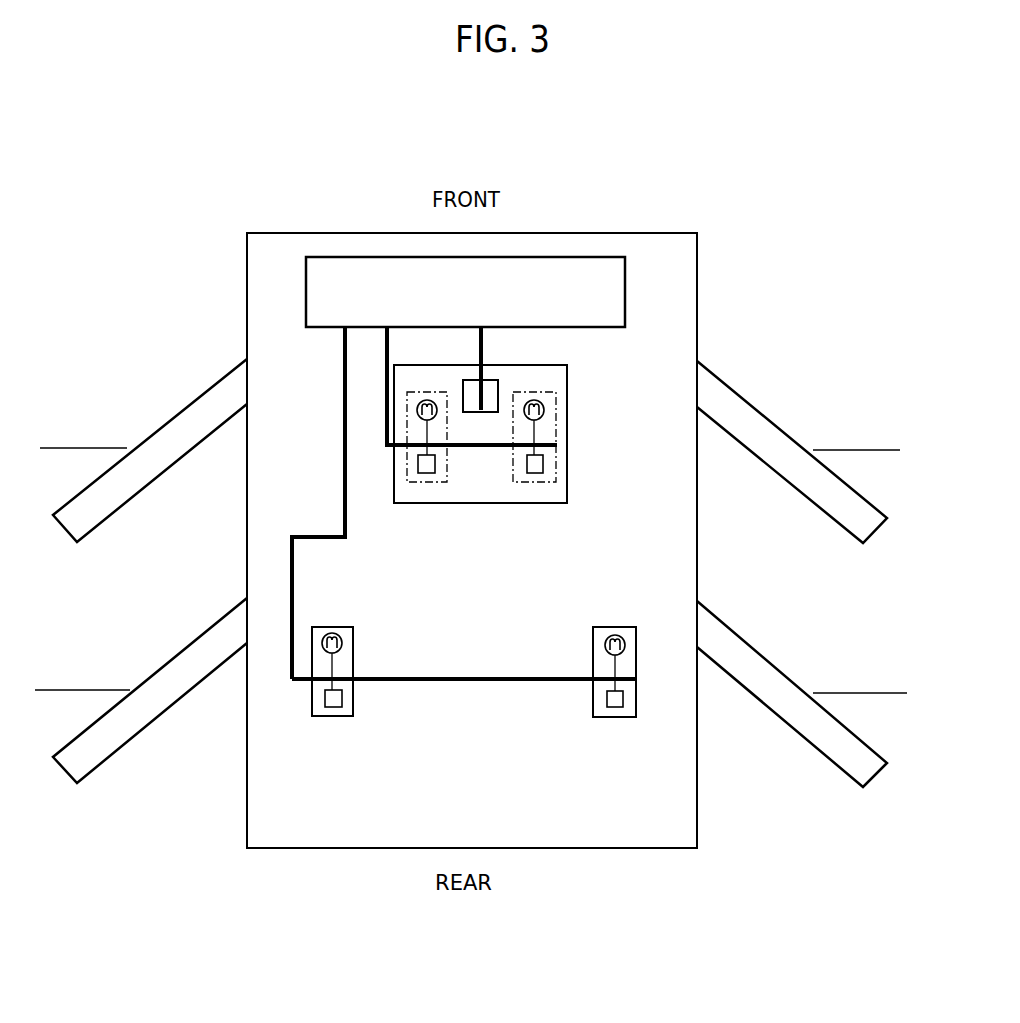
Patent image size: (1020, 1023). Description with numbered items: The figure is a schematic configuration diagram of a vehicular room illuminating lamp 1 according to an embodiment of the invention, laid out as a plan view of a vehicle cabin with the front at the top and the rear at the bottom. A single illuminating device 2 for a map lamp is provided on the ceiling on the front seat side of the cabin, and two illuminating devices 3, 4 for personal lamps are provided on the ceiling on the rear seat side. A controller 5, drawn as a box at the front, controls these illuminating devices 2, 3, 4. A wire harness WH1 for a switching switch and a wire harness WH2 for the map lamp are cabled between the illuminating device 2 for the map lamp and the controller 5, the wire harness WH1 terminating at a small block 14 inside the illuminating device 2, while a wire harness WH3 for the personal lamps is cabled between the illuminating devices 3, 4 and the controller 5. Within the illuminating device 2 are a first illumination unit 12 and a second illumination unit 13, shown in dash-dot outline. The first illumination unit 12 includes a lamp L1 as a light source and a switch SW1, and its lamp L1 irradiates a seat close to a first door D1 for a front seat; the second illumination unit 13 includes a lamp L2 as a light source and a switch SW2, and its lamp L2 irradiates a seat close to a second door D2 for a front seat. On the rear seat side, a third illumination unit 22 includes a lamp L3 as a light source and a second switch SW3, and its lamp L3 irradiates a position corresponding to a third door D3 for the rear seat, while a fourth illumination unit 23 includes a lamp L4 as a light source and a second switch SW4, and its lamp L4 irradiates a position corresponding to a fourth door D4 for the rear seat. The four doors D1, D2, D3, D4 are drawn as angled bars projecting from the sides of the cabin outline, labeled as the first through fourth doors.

The vehicular room illuminating lamp 1 is at (260, 202).
The controller 5 is at (618, 295).
The illuminating device for a map lamp 2 is at (567, 455).
The illuminating device for a personal lamp 3 is at (335, 627).
The illuminating device for a personal lamp 4 is at (620, 627).
The first illumination unit 12 is at (447, 478).
The second illumination unit 13 is at (513, 478).
The connector 14 is at (498, 392).
The third illumination unit 22 is at (318, 716).
The fourth illumination unit 23 is at (600, 717).
The lamp L1 is at (428, 400).
The lamp L2 is at (544, 410).
The lamp L3 is at (342, 640).
The lamp L4 is at (605, 645).
The switch SW1 is at (420, 475).
The switch SW2 is at (543, 475).
The switch (second switch) SW3 is at (338, 716).
The switch (second switch) SW4 is at (618, 717).
The wire harness for a switching switch WH1 is at (484, 352).
The wire harness for the map lamp WH2 is at (424, 503).
The wire harness for the personal lamps WH3 is at (467, 682).
The first door D1 is at (73, 530).
The second door D2 is at (860, 532).
The third door D3 is at (73, 773).
The fourth door D4 is at (860, 778).